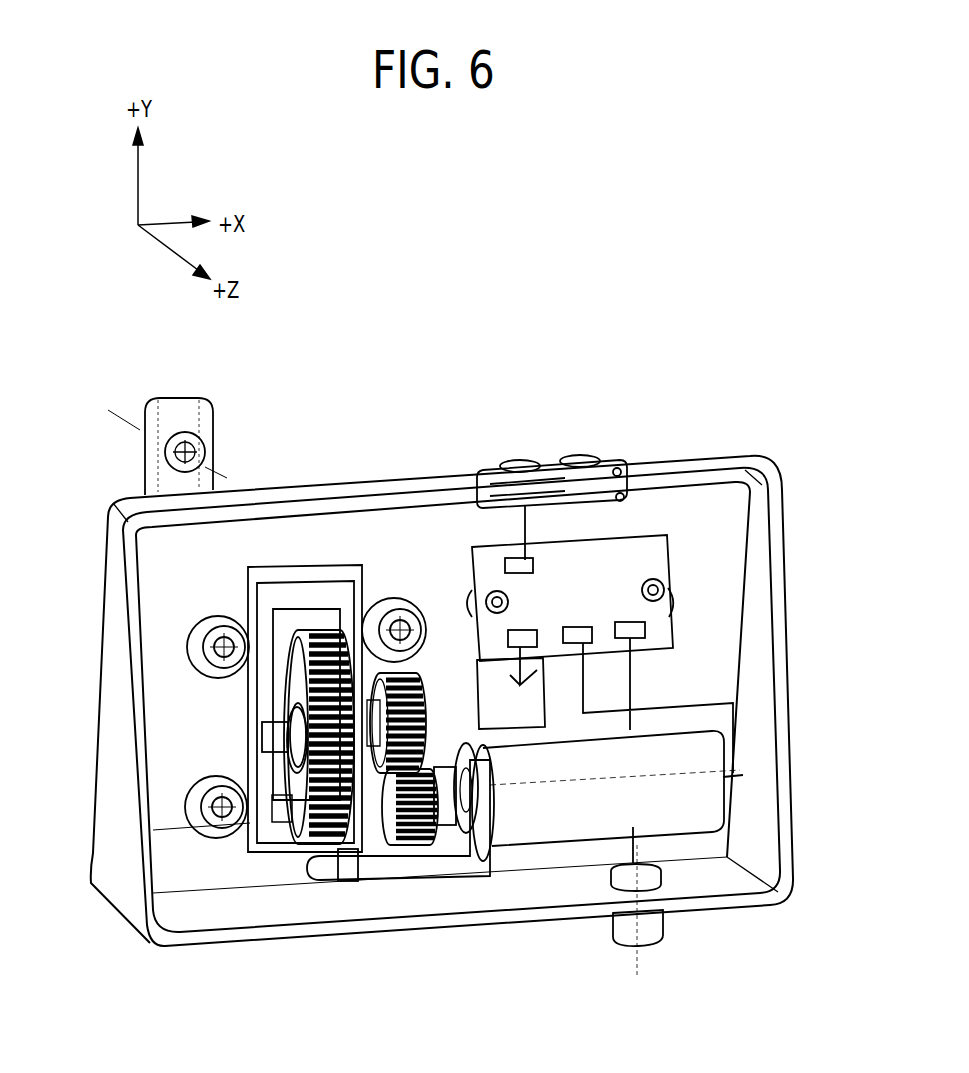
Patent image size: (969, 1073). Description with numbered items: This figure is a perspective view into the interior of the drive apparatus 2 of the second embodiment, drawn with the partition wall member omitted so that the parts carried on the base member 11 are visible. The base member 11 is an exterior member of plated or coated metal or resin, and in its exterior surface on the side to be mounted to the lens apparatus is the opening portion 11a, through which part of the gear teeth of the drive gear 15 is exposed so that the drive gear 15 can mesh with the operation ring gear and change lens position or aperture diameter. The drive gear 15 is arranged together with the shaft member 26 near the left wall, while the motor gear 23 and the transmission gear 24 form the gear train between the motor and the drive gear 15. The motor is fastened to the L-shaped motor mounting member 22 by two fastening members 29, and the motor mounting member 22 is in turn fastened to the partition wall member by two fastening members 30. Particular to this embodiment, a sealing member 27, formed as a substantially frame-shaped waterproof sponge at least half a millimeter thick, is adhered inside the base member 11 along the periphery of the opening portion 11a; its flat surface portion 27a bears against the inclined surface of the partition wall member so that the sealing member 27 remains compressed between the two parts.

The drive apparatus 2 is at (742, 287).
The base member 11 is at (712, 530).
The opening portion 11a is at (280, 820).
The drive gear 15 is at (303, 813).
The motor mounting member 22 is at (387, 870).
The motor gear 23 is at (425, 828).
The transmission gear 24 is at (393, 690).
The shaft member 26 is at (273, 731).
The sealing member 27 is at (280, 590).
The flat surface portion 27a is at (333, 598).
The fastening members 29 is at (478, 822).
The fastening members 30 is at (347, 878).